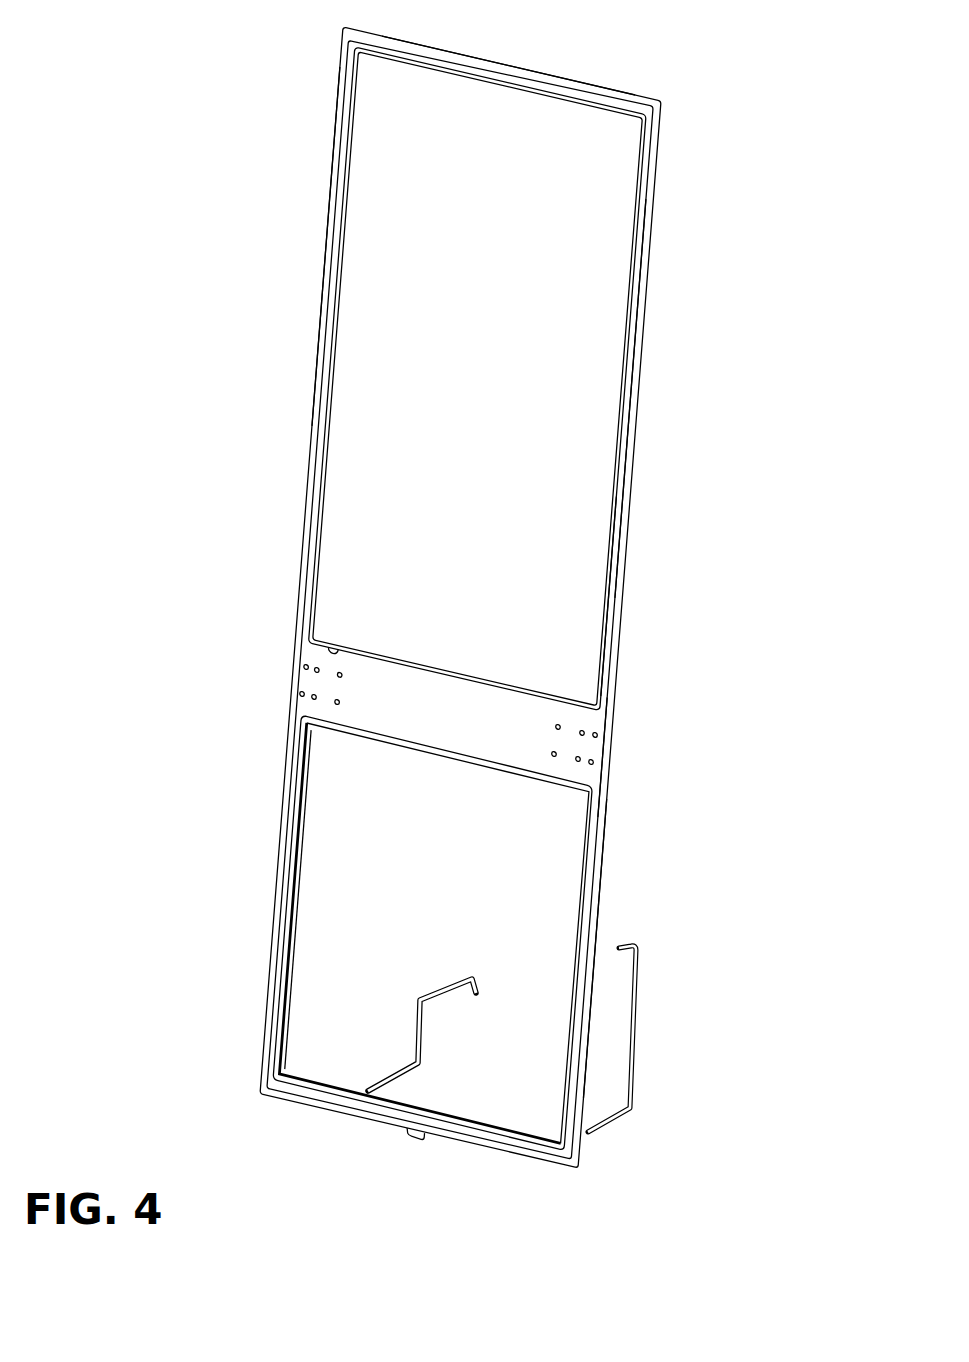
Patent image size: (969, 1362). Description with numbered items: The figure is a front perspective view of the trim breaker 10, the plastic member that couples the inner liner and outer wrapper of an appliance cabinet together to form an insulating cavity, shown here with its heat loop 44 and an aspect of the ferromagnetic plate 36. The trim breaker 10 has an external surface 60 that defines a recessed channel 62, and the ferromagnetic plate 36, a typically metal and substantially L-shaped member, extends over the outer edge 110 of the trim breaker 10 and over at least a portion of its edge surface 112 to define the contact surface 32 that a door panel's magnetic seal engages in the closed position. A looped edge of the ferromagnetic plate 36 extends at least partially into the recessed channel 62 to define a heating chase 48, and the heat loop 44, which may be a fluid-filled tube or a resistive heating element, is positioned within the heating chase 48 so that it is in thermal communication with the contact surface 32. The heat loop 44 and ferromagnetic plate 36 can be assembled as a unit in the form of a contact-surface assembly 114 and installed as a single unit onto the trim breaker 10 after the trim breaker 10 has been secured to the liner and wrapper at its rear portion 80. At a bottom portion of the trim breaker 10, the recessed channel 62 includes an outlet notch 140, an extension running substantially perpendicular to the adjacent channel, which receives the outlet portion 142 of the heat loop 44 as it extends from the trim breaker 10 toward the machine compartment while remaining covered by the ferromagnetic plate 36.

The trim breaker 10 is at (283, 596).
The contact surface 32 is at (608, 706).
The ferromagnetic plate 36 is at (633, 363).
The heat loop 44 is at (642, 1019).
The heating chase 48 is at (455, 50).
The external surface 60 is at (332, 383).
The recessed channel 62 is at (323, 257).
The rear portion 80 is at (305, 877).
The outer edge 110 is at (610, 607).
The edge surface 112 is at (587, 886).
The contact-surface assembly 114 is at (325, 136).
The outlet notch 140 is at (407, 1132).
The outlet portion 142 is at (437, 982).